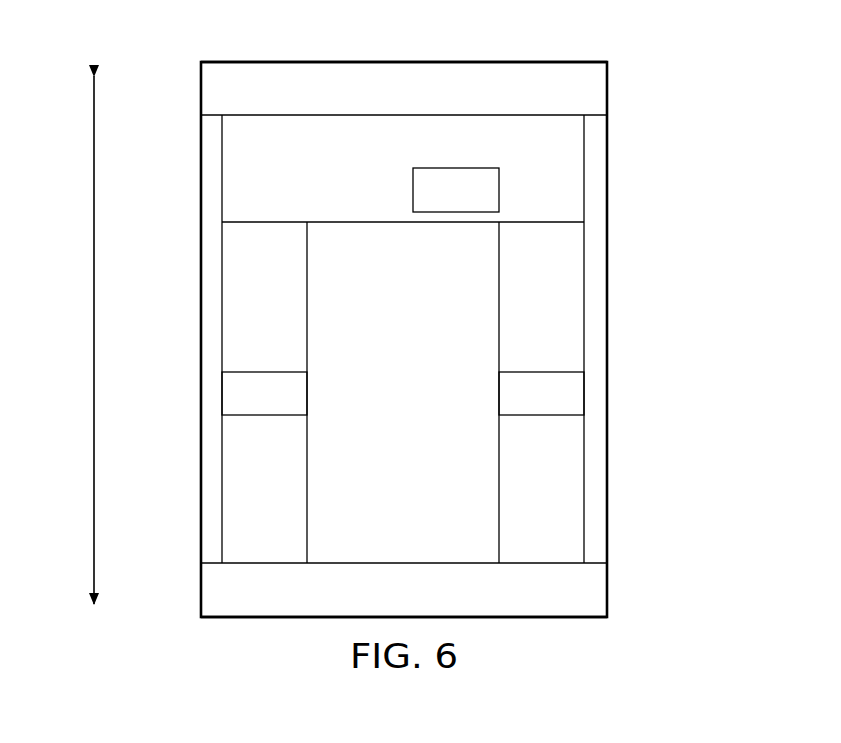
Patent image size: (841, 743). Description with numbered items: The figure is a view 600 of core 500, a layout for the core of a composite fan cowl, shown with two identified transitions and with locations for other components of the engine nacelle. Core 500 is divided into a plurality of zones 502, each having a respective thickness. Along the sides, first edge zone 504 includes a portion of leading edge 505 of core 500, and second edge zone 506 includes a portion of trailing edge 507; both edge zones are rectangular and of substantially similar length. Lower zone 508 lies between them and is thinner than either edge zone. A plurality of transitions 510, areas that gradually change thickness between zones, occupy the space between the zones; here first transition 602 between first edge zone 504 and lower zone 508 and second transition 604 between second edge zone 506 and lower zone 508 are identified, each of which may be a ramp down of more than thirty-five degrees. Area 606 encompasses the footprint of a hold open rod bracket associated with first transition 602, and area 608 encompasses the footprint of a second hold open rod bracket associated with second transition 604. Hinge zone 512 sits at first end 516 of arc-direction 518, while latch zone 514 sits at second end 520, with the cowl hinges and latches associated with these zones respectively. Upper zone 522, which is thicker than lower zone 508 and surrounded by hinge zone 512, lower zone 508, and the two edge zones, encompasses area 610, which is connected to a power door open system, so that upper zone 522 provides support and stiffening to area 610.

The core 500 is at (652, 533).
The plurality of zones 502 is at (630, 166).
The first edge zone 504 is at (210, 447).
The leading edge 505 is at (201, 341).
The second edge zone 506 is at (598, 448).
The trailing edge 507 is at (598, 342).
The lower zone 508 is at (425, 406).
The plurality of transitions 510 is at (619, 114).
The hinge zone 512 is at (424, 101).
The latch zone 514 is at (424, 603).
The first end 516 is at (488, 62).
The arc-direction 518 is at (92, 341).
The second end 520 is at (508, 617).
The upper zone 522 is at (339, 183).
The view 600 is at (670, 597).
The first transition 602 is at (286, 311).
The second transition 604 is at (564, 311).
The area 606 is at (262, 415).
The area 608 is at (543, 415).
The area 610 is at (499, 190).